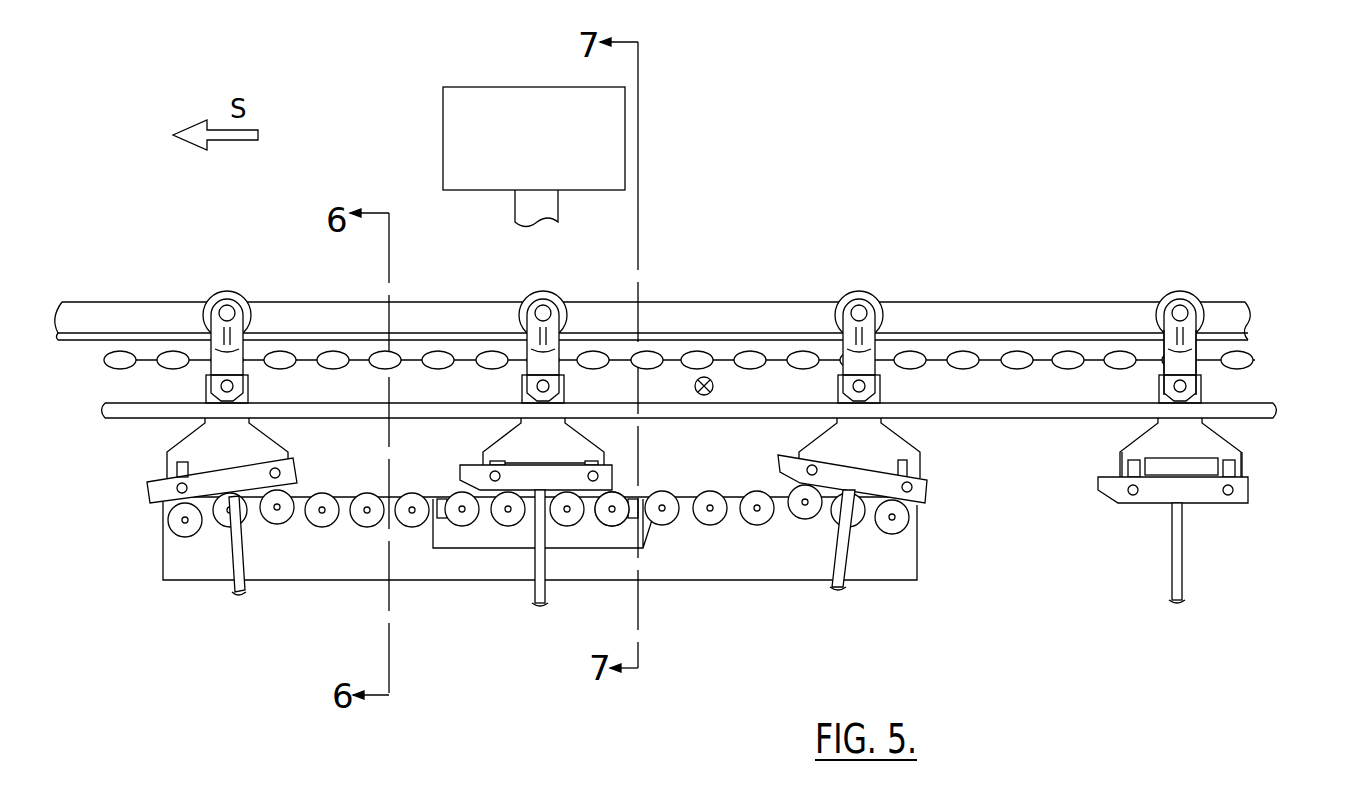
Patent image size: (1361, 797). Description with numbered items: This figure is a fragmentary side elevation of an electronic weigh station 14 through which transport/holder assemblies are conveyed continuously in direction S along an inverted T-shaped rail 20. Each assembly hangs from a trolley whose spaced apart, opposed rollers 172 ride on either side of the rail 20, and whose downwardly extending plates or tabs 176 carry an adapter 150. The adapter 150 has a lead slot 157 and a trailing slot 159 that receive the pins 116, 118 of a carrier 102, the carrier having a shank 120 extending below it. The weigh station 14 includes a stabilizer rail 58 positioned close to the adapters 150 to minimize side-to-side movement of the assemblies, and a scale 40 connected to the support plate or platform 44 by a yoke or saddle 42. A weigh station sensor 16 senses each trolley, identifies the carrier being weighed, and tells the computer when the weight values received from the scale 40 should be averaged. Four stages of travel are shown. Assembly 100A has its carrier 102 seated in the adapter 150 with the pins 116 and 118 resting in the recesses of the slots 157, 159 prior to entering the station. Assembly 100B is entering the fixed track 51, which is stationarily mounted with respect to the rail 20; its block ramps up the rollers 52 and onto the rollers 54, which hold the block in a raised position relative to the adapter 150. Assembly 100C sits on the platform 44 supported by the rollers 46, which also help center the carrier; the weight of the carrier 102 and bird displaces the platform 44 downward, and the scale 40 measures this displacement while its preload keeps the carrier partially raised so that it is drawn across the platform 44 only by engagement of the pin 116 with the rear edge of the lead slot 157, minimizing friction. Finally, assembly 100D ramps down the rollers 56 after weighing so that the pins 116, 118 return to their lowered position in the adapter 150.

The electronic weigh station 14 is at (721, 208).
The weigh station sensor 16 is at (704, 377).
The rail 20 is at (970, 302).
The scale 40 is at (555, 150).
The yoke or saddle 42 is at (522, 208).
The support plate 44 is at (560, 520).
The rollers 46 is at (600, 522).
The fixed track 51 is at (905, 548).
The rollers 52 is at (890, 535).
The rollers 54 is at (322, 528).
The rollers 56 is at (165, 526).
The stabilizer rail 58 is at (980, 417).
The assembly 100A is at (1212, 508).
The assembly 100B is at (798, 587).
The assembly 100C is at (490, 661).
The assembly 100D is at (208, 607).
The carrier 102 is at (1283, 489).
The pin 116 is at (1135, 497).
The pin 118 is at (1229, 497).
The shank 120 is at (1175, 585).
The adapter 150 is at (1190, 440).
The lead slot 157 is at (1132, 472).
The trailing slot 159 is at (1225, 455).
The rollers 172 is at (1180, 291).
The plates or tabs 176 is at (1188, 360).